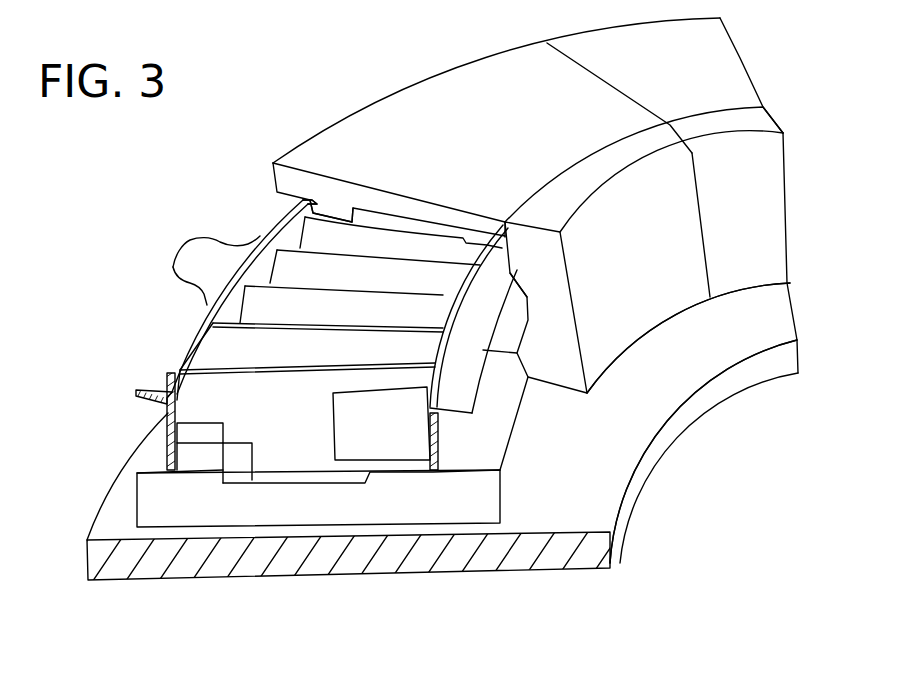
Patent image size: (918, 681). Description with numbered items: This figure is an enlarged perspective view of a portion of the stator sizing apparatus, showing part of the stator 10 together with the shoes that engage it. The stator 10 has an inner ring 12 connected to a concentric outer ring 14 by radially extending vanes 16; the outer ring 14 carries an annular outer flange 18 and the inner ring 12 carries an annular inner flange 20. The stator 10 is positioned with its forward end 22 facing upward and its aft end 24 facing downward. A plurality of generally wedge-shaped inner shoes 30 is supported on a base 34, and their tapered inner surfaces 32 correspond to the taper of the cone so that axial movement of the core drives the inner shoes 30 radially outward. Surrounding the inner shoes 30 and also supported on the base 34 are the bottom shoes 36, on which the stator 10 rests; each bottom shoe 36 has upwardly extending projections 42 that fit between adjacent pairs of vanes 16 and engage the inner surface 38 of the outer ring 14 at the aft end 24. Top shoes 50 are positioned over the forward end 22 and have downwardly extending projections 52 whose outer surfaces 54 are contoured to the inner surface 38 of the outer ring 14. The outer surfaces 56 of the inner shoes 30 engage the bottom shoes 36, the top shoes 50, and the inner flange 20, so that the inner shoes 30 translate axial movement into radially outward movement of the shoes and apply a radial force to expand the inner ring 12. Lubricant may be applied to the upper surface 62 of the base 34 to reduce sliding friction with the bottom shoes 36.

The stator 10 is at (398, 468).
The inner ring 12 is at (438, 435).
The outer ring 14 is at (163, 433).
The vanes 16 is at (262, 300).
The annular outer flange 18 is at (158, 377).
The annular inner flange 20 is at (472, 392).
The forward end 22 is at (278, 362).
The aft end 24 is at (252, 482).
The inner shoes 30 is at (732, 265).
The inner surfaces 32 is at (607, 323).
The base 34 is at (538, 553).
The bottom shoes 36 is at (293, 503).
The inner surface 38 is at (258, 258).
The projections 42 is at (195, 452).
The top shoes 50 is at (602, 42).
The projections 52 is at (330, 210).
The outer surfaces 54 is at (297, 203).
The outer surfaces 56 is at (530, 310).
The upper surface 62 is at (587, 497).